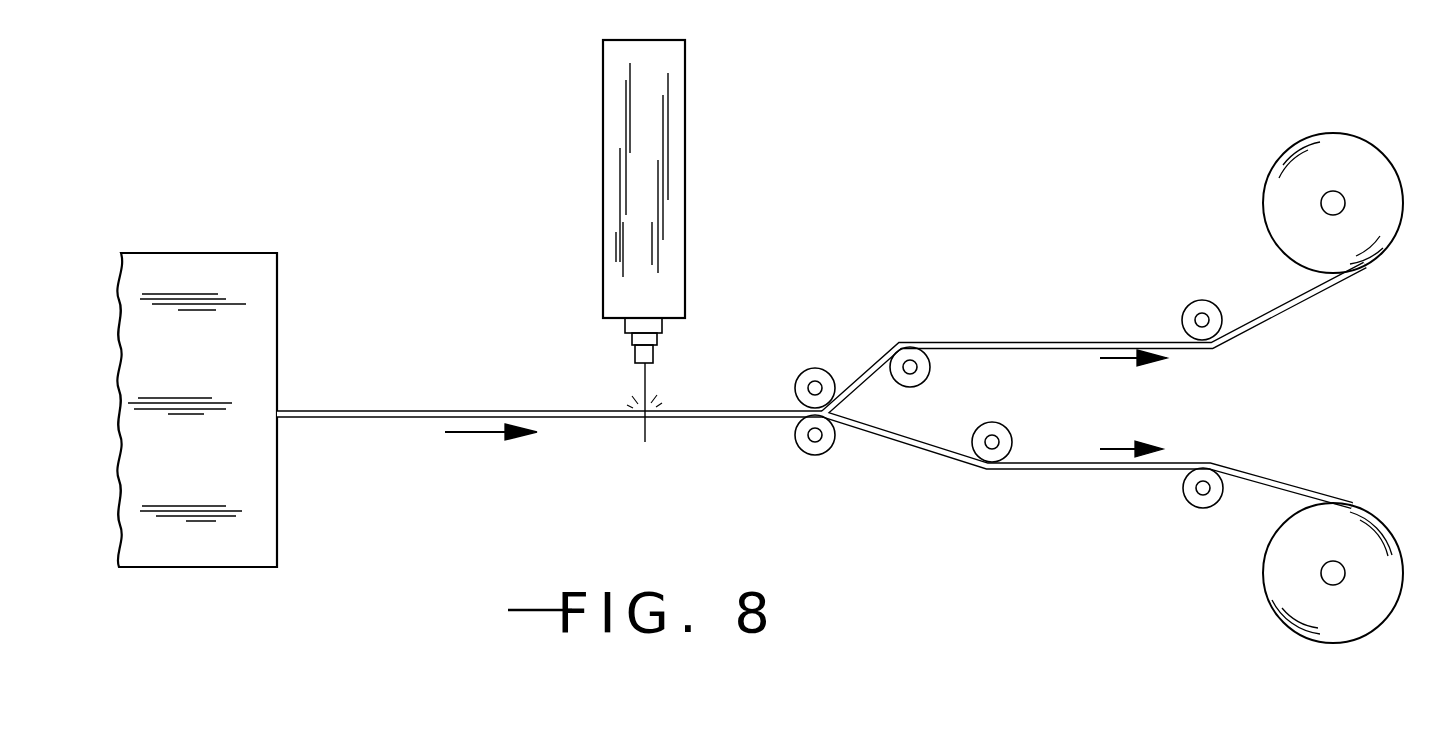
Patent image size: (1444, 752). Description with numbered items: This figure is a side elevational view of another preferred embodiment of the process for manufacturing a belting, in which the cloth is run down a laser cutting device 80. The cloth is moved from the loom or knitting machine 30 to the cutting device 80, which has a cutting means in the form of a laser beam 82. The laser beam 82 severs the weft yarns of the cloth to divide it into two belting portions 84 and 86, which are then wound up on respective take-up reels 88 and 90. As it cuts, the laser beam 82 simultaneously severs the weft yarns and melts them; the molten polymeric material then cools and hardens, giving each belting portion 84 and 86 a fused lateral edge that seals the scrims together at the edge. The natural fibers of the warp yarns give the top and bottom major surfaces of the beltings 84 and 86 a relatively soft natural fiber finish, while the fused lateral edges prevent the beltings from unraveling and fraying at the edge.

The loom or knitting machine 30 is at (254, 386).
The laser cutting device 80 is at (701, 193).
The laser beam 82 is at (647, 380).
The belting portion 84 is at (1022, 337).
The belting portion 86 is at (1065, 470).
The take-up reel 88 is at (1355, 167).
The take-up reel 90 is at (1358, 610).